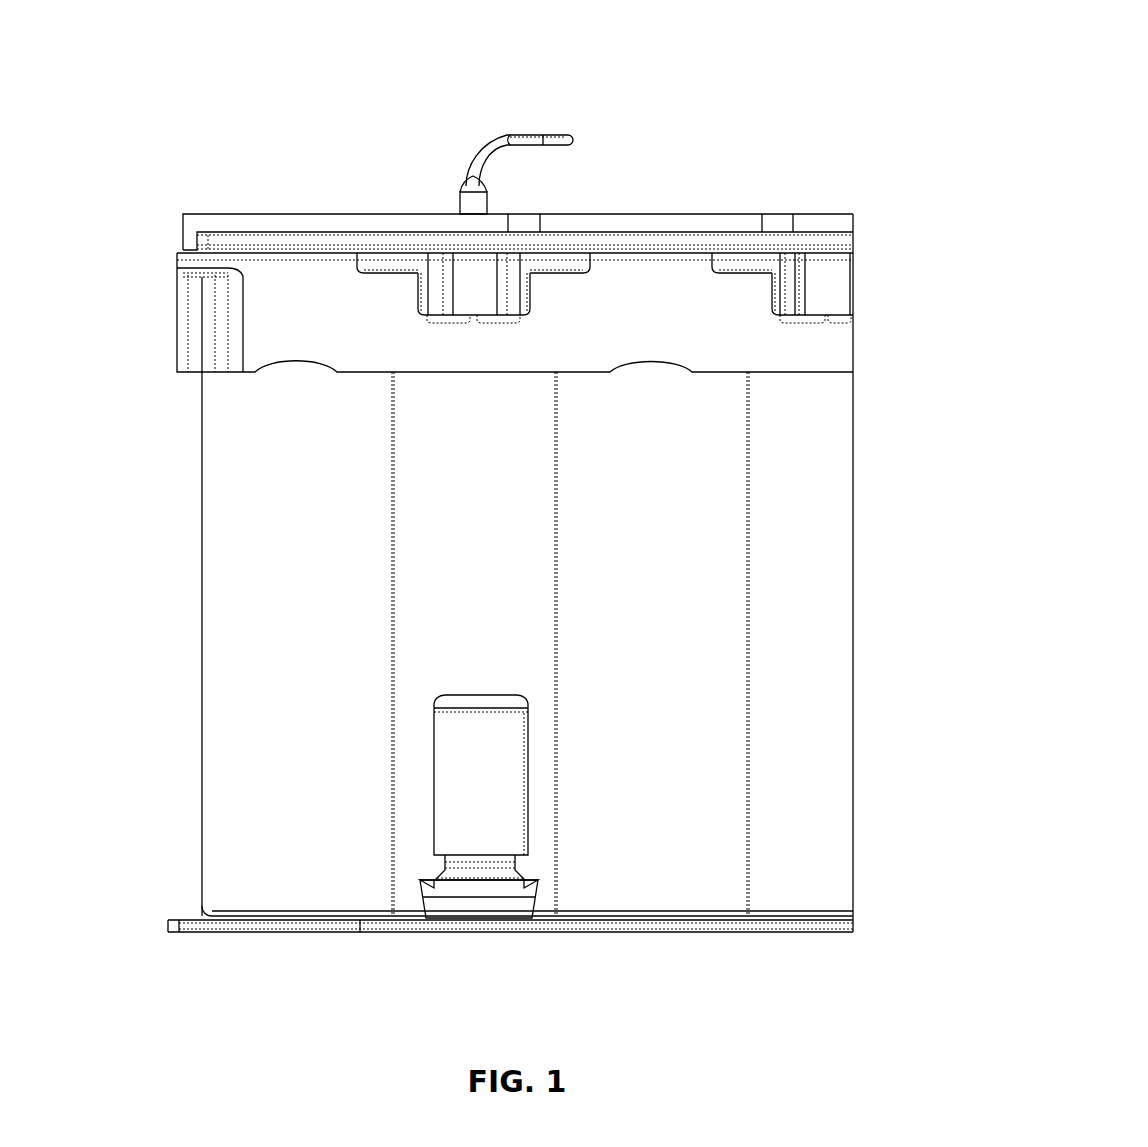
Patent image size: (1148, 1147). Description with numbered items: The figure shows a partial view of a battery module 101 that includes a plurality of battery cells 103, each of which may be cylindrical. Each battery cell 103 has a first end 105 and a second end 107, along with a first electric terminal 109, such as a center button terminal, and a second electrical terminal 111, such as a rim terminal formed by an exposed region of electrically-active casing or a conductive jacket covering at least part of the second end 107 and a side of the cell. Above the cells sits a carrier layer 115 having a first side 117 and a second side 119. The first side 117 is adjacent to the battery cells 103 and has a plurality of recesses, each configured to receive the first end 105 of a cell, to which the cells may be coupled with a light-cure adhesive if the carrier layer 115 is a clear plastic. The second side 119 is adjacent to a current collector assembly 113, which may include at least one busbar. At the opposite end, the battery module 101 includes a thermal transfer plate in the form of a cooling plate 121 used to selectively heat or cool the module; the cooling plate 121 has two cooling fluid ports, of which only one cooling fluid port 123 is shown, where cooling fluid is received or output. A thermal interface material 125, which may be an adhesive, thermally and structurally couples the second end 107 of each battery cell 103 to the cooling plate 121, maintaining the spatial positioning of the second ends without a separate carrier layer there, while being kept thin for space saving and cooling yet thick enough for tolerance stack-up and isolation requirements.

The battery module 101 is at (760, 66).
The battery cells 103 is at (212, 478).
The first end 105 is at (146, 225).
The second end 107 is at (150, 893).
The first electric terminal 109 is at (317, 250).
The second electrical terminal 111 is at (348, 250).
The current collector assembly 113 is at (178, 213).
The carrier layer 115 is at (258, 312).
The first side 117 is at (834, 378).
The second side 119 is at (836, 252).
The cooling plate 121 is at (210, 931).
The cooling fluid port 123 is at (500, 840).
The thermal interface material 125 is at (810, 918).